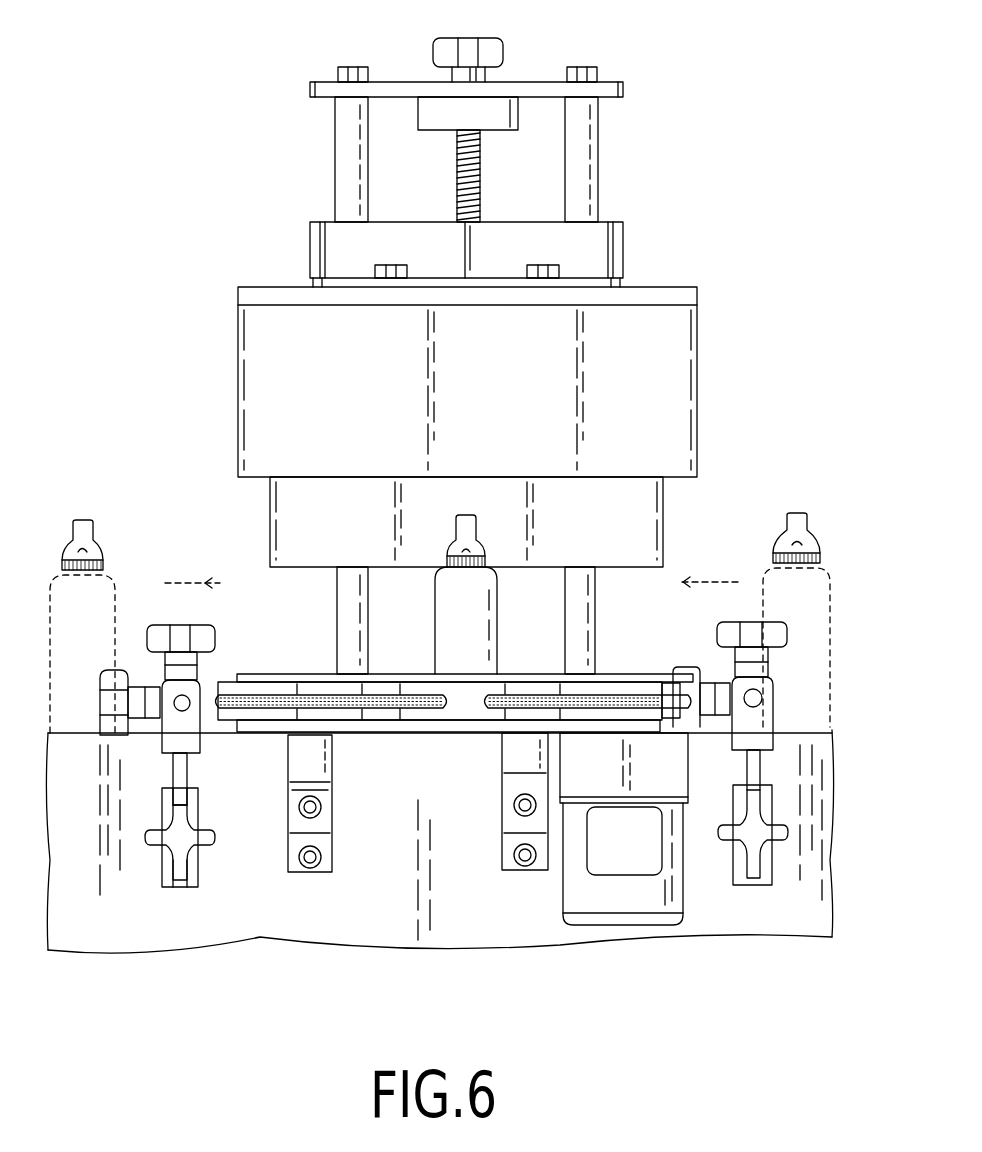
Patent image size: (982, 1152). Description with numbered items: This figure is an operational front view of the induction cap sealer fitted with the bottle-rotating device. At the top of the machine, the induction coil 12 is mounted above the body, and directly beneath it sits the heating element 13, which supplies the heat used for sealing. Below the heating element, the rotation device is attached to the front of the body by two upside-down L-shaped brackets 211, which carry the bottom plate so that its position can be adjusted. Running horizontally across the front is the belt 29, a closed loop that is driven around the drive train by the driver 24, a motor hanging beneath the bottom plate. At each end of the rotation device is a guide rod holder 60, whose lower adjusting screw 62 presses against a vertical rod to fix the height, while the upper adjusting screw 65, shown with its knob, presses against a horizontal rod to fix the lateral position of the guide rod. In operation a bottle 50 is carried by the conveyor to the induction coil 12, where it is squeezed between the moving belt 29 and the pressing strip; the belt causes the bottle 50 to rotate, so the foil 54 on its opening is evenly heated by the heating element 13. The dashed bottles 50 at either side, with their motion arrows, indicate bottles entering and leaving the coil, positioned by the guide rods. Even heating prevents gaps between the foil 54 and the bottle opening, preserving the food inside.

The induction coil 12 is at (672, 333).
The heating element 13 is at (640, 507).
The driver 24 is at (595, 857).
The belt 29 is at (410, 708).
The bottle 50 is at (505, 600).
The foil 54 is at (450, 560).
The guide rod holder 60 is at (193, 841).
The lower adjusting screw 62 is at (170, 835).
The upper adjusting screw 65 is at (202, 633).
The upside-down L-shaped bracket 211 is at (290, 828).